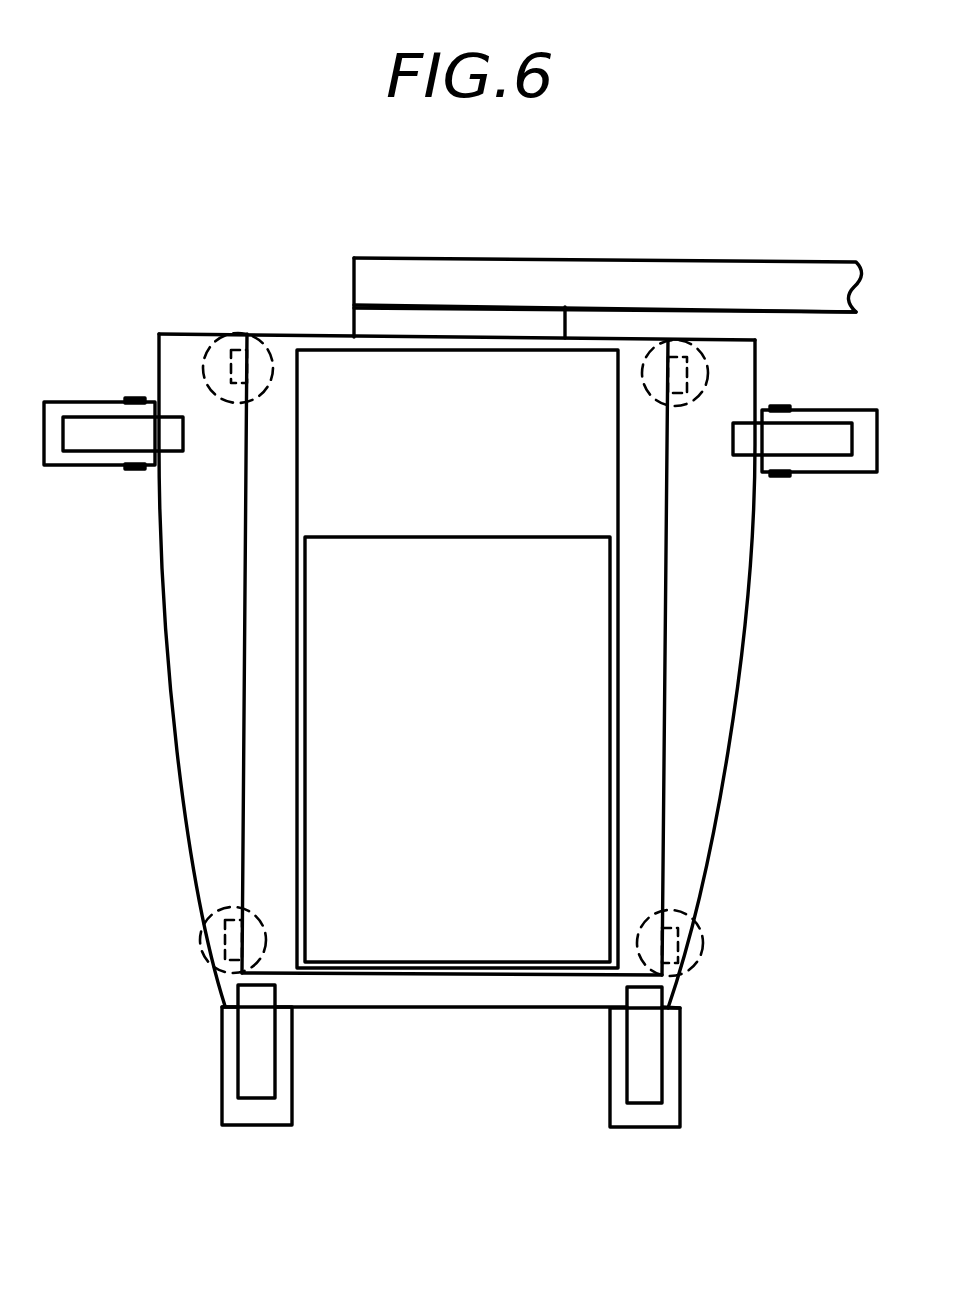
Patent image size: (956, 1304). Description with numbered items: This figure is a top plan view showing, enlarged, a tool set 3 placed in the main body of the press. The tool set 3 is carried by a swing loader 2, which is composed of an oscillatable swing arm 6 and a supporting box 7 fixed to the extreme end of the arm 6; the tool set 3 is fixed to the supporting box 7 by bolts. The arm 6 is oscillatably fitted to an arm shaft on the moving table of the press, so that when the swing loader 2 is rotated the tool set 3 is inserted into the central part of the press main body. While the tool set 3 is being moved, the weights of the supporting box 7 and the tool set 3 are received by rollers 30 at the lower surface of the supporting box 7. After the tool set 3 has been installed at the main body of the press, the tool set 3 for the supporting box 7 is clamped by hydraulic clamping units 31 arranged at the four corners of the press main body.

The swing loader 2 is at (592, 258).
The swing arm 6 is at (446, 268).
The supporting box 7 is at (648, 776).
The tool set 3 is at (568, 733).
The roller 30 is at (687, 378).
The hydraulic clamping unit 31 is at (95, 425).